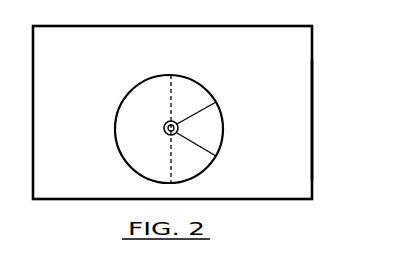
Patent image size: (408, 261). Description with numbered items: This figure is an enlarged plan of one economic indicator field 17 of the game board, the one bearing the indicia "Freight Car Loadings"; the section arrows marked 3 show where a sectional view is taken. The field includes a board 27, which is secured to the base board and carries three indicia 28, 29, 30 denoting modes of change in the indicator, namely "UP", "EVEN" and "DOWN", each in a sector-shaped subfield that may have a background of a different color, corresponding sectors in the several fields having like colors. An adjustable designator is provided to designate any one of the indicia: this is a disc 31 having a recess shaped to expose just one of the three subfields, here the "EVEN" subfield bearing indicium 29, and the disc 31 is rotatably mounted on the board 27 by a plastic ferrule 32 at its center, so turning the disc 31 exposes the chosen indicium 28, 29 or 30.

The economic indicator field 17 is at (331, 65).
The board 27 is at (307, 120).
The indicium 28 is at (202, 91).
The indicium 29 is at (221, 138).
The indicium 30 is at (207, 176).
The disc 31 is at (133, 83).
The plastic ferrule 32 is at (165, 135).
The section line 3- 3 is at (100, 128).